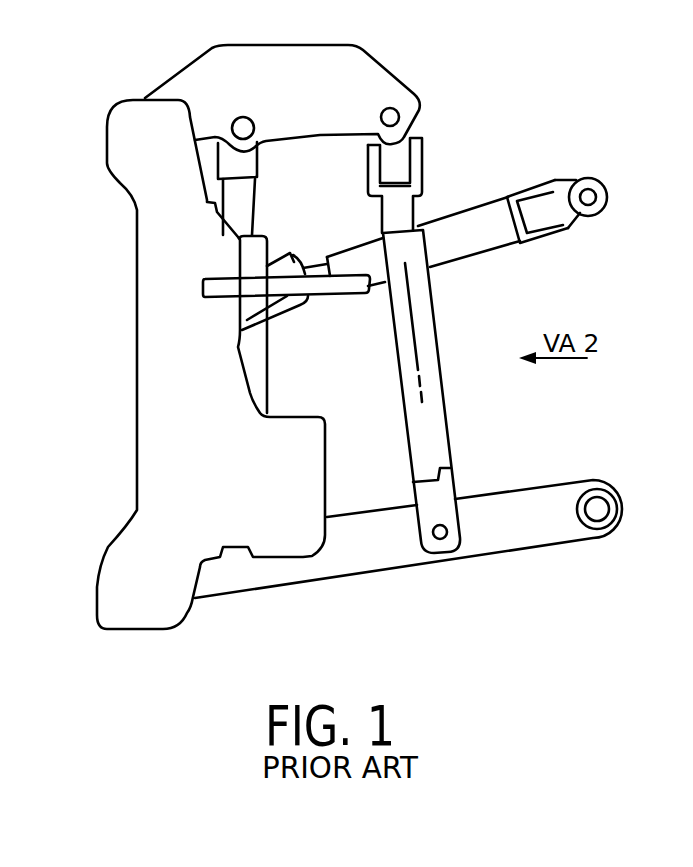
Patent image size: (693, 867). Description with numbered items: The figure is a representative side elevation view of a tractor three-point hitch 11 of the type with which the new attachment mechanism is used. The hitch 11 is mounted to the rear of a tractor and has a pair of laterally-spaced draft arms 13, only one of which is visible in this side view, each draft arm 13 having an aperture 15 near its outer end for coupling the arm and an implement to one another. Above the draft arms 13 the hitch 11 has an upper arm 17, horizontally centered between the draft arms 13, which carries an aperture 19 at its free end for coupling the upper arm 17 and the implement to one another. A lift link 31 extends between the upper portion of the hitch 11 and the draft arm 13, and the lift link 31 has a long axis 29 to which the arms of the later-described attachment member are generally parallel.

The 3-point hitch 11 is at (460, 68).
The draft arm 13 is at (507, 552).
The aperture 15 is at (597, 513).
The upper arm 17 is at (460, 212).
The aperture 19 is at (586, 188).
The long axis 29 is at (420, 370).
The lift link 31 is at (448, 442).